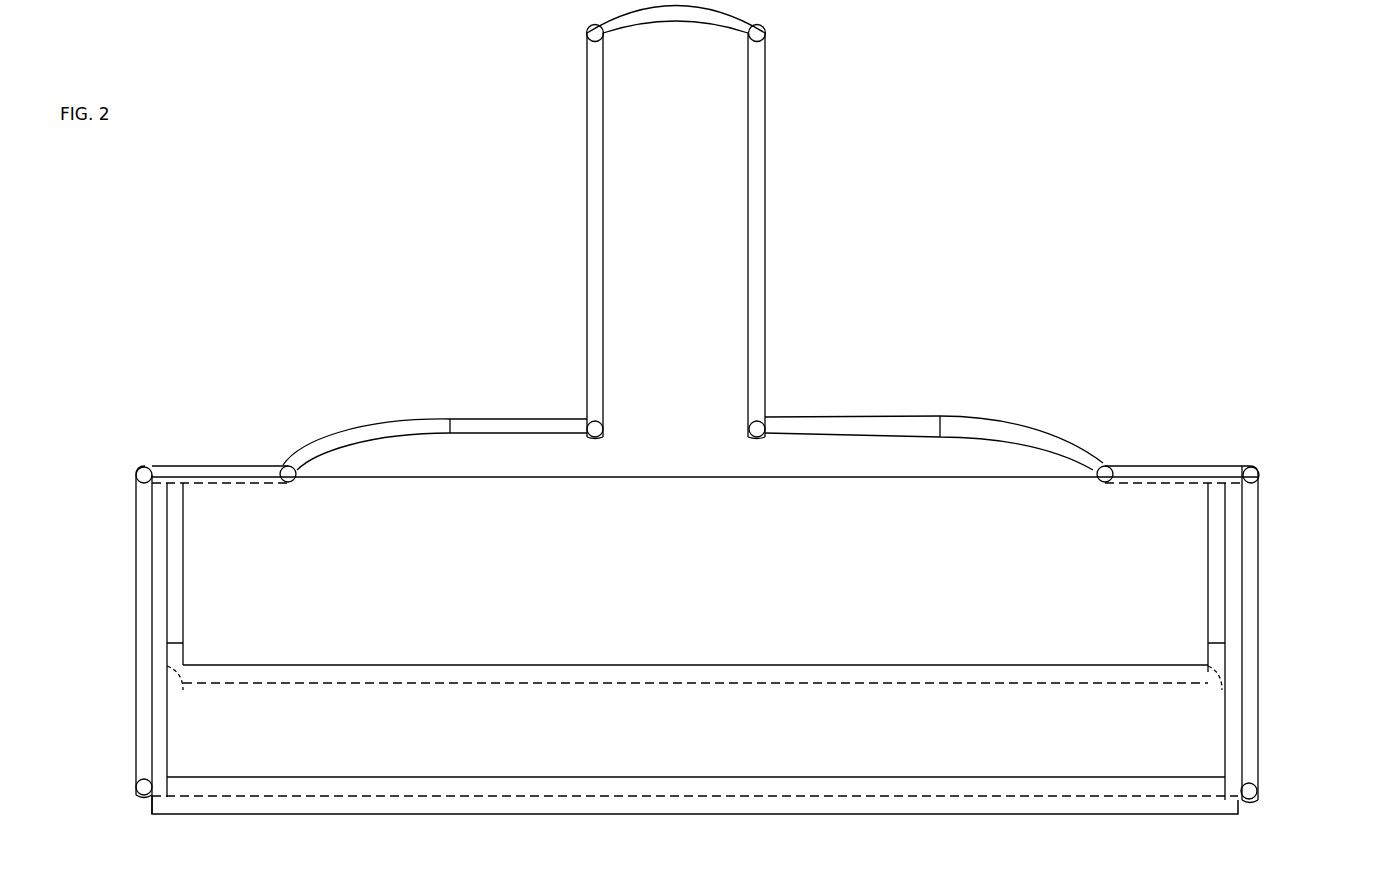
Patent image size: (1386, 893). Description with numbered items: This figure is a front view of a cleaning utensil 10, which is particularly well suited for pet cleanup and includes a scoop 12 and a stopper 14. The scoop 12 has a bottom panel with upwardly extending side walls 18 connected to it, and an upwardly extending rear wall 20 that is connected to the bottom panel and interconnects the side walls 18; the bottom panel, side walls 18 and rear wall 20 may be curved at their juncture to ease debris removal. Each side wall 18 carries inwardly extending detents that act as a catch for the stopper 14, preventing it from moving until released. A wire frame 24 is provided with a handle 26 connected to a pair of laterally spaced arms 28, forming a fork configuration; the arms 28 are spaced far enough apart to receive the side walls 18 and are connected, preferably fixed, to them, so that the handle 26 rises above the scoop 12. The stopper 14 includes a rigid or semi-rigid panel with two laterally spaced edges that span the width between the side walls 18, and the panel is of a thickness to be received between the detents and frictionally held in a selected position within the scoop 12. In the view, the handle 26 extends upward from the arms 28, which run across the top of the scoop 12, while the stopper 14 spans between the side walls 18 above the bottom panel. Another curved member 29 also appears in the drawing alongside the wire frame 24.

The cleaning utensil 10 is at (1166, 334).
The scoop 12 is at (176, 484).
The stopper 14 is at (1080, 665).
The side walls 18 is at (183, 558).
The rear wall 20 is at (935, 545).
The wire frame 24 is at (587, 417).
The handle 26 is at (583, 163).
The arms 28 is at (137, 695).
The right arcuate tube 29 is at (1016, 418).